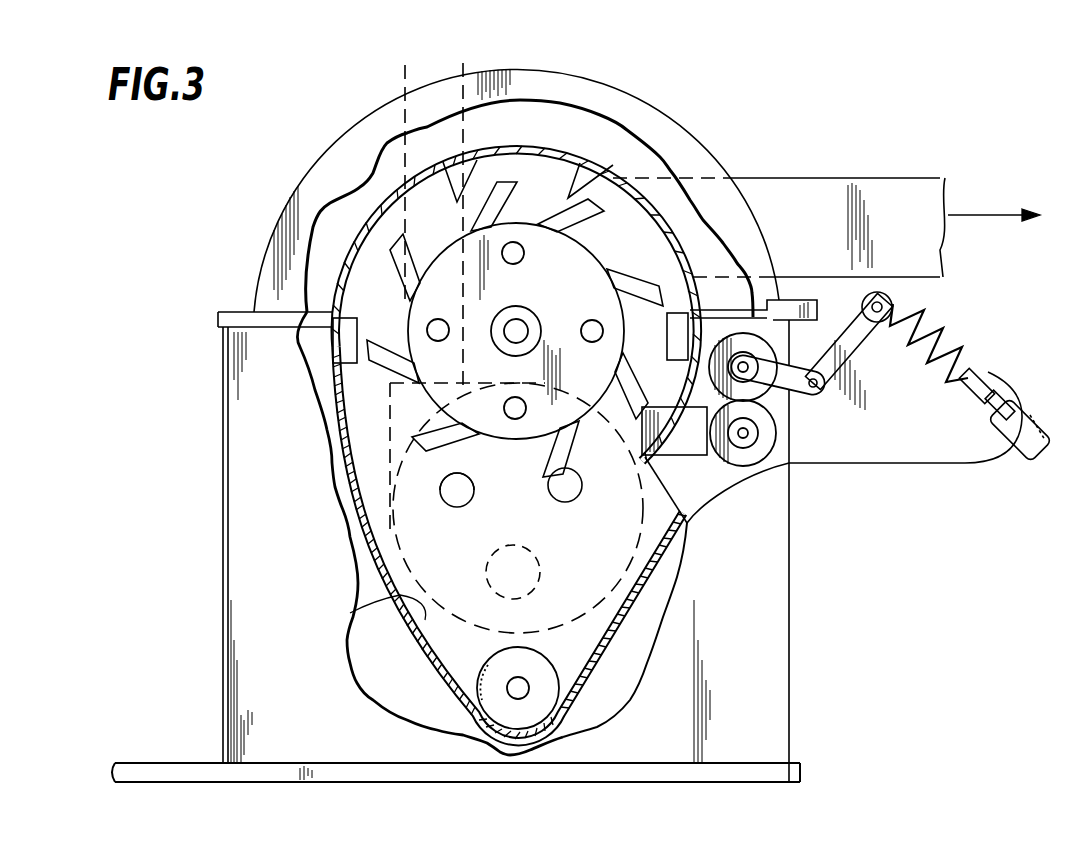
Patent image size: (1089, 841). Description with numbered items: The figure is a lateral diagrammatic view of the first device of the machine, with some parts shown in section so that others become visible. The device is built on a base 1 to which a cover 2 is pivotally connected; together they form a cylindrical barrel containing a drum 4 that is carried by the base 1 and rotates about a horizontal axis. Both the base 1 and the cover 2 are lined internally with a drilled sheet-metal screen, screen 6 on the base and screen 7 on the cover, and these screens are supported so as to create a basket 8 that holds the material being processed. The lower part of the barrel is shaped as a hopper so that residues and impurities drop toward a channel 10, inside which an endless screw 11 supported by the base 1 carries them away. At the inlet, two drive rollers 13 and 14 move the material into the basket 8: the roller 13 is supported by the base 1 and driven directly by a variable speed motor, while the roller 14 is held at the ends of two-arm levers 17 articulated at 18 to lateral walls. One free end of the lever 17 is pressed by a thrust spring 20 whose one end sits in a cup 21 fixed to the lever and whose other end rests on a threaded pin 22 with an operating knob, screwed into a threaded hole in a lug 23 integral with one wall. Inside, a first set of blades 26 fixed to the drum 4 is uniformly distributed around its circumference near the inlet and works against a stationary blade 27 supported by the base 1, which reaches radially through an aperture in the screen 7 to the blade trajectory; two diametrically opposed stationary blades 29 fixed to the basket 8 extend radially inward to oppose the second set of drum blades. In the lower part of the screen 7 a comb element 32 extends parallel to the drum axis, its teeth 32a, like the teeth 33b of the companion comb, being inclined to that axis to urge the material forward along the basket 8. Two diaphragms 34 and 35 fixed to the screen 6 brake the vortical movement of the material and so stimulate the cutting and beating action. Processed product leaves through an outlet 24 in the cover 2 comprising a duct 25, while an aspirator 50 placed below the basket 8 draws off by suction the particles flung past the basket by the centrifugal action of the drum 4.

The base 1 is at (228, 440).
The cover 2 is at (370, 117).
The drum 4 is at (420, 303).
The screen 6 is at (333, 390).
The screen 7 is at (383, 193).
The basket 8 is at (665, 203).
The channel 10 is at (350, 613).
The endless screw 11 is at (505, 690).
The drive roller 13 is at (745, 448).
The drive roller 14 is at (743, 340).
The two-arm lever 17 is at (792, 392).
The articulation 18 is at (815, 392).
The thrust spring 20 is at (930, 342).
The cup 21 is at (893, 306).
The threaded pin 22 is at (985, 414).
The lug 23 is at (985, 383).
The outlet 24 is at (994, 200).
The duct 25 is at (787, 177).
The blades 26 is at (514, 182).
The stationary blade 27 is at (684, 514).
The stationary blades 29 is at (672, 335).
The comb element 32 is at (450, 474).
The teeth 32a is at (440, 520).
The teeth 33b is at (574, 500).
The diaphragm 34 is at (455, 160).
The diaphragm 35 is at (588, 165).
The aspirator 50 is at (485, 572).